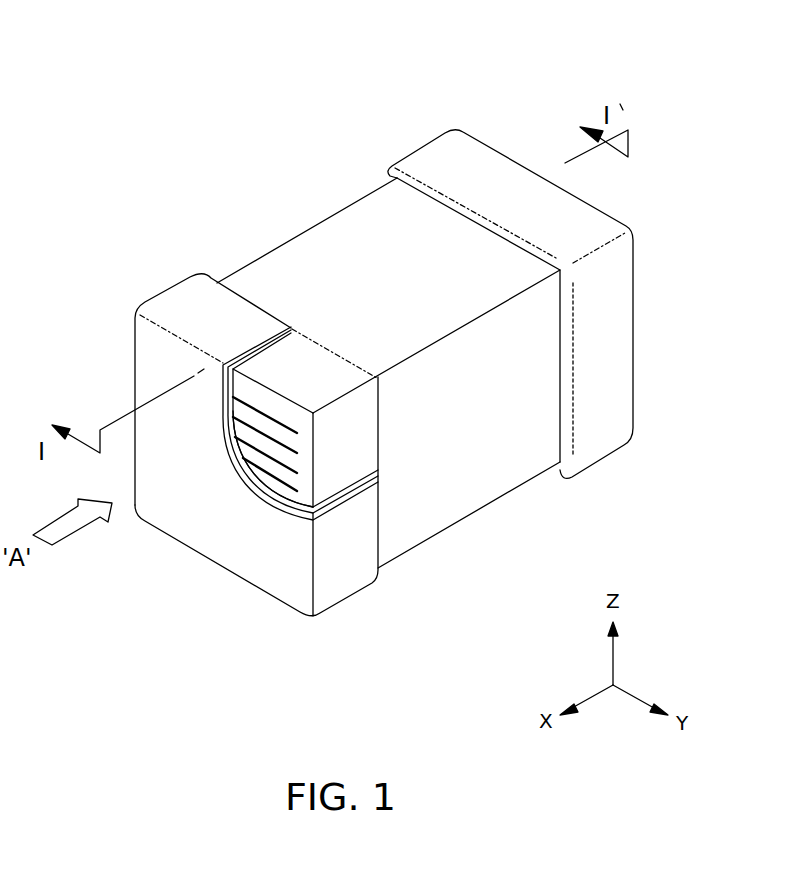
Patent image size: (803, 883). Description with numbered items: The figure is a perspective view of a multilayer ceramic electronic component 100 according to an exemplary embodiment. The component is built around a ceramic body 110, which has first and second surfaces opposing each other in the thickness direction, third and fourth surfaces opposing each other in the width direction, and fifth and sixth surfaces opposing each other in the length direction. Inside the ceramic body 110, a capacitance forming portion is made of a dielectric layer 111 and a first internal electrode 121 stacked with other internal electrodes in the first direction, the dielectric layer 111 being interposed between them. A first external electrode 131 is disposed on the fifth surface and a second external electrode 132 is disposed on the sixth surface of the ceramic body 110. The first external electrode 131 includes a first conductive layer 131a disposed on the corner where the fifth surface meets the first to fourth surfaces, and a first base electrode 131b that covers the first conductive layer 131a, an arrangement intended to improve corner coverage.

The multilayer ceramic electronic component 100 is at (147, 38).
The ceramic body 110 is at (343, 225).
The dielectric layer 111 is at (243, 467).
The first internal electrode 121 is at (280, 468).
The first external electrode 131 is at (231, 418).
The first conductive layer 131a is at (268, 339).
The first base electrode 131b is at (262, 355).
The second external electrode 132 is at (496, 158).